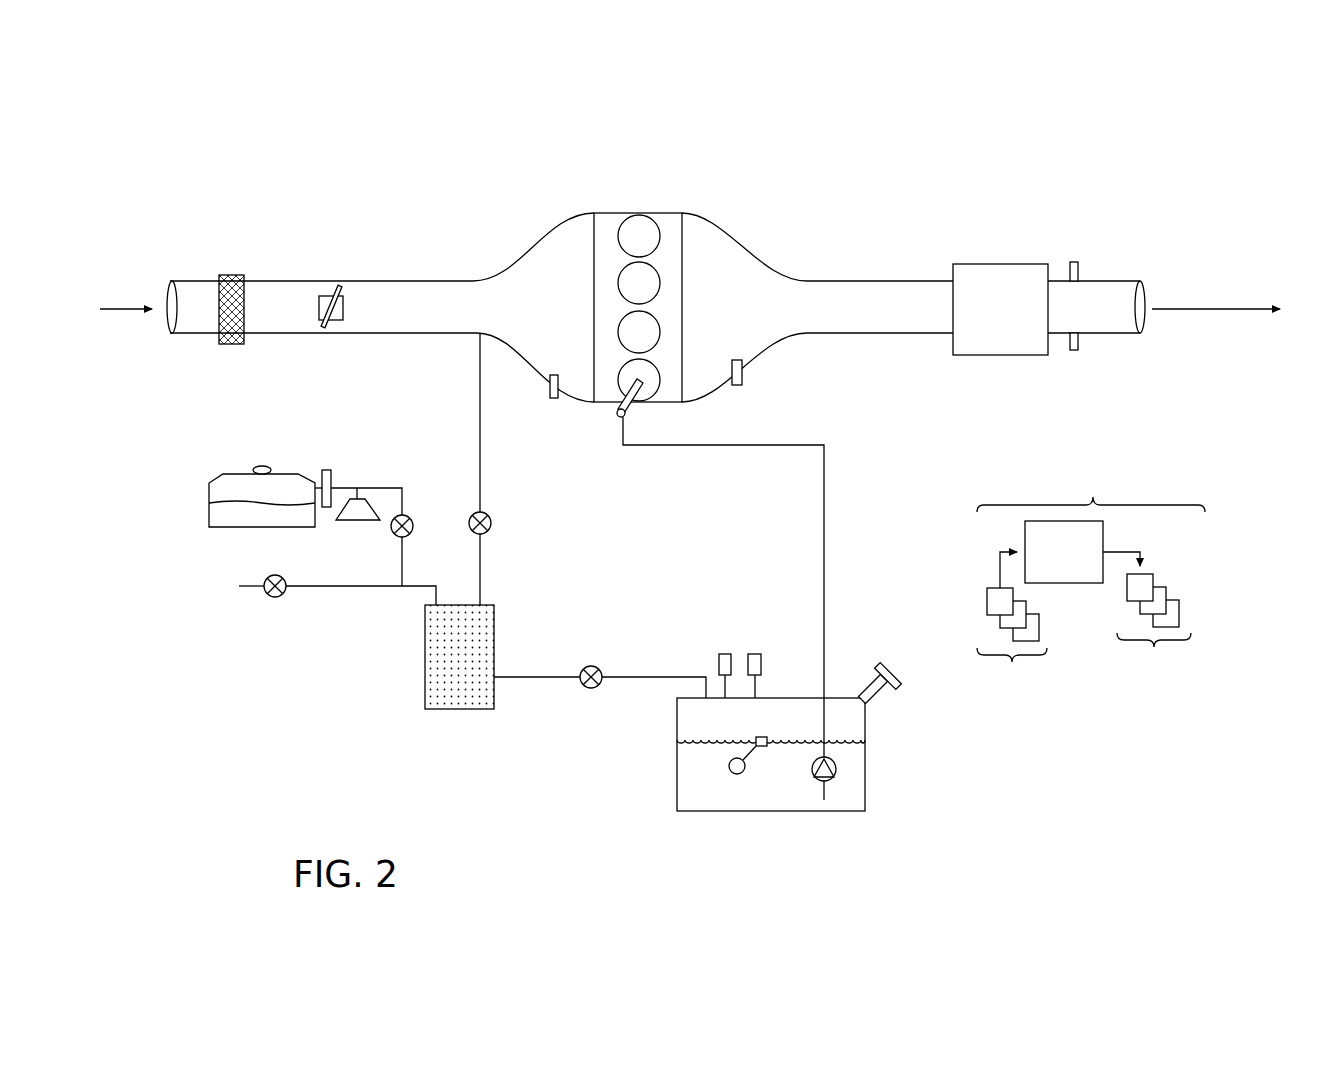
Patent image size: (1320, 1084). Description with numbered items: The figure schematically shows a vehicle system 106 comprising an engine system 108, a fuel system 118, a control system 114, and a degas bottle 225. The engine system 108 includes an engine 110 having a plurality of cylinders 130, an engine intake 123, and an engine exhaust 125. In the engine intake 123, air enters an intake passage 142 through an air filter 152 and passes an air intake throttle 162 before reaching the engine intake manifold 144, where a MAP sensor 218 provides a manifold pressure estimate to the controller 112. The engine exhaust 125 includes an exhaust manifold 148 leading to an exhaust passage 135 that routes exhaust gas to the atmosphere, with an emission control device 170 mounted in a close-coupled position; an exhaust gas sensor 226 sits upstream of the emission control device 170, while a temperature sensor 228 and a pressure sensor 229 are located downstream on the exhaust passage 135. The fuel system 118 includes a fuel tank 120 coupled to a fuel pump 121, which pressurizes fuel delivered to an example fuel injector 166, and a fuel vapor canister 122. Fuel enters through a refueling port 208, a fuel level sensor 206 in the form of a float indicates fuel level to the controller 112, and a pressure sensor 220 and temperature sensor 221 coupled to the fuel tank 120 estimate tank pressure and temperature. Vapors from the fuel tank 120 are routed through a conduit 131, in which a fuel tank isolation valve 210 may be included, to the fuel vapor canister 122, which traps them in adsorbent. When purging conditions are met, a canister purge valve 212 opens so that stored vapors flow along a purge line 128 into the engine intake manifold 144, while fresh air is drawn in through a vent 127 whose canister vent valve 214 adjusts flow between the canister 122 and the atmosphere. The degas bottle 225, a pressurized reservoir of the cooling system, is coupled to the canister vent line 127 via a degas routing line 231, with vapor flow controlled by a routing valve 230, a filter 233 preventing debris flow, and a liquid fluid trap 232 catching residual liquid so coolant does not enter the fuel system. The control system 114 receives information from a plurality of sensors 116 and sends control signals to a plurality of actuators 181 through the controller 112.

The vehicle system 106 is at (196, 203).
The engine system 108 is at (1175, 187).
The engine 110 is at (682, 290).
The controller 112 is at (1064, 552).
The control system 114 is at (1091, 484).
The sensors 116 is at (1012, 626).
The fuel system 118 is at (905, 838).
The fuel tank 120 is at (677, 811).
The fuel pump 121 is at (837, 781).
The fuel vapor canister 122 is at (440, 710).
The engine intake 123 is at (526, 236).
The engine exhaust 125 is at (792, 244).
The vent 127 is at (248, 586).
The purge line 128 is at (481, 487).
The cylinders 130 is at (635, 215).
The conduit 131 is at (640, 677).
The exhaust passage 135 is at (1121, 278).
The intake passage 142 is at (198, 334).
The engine intake manifold 144 is at (548, 307).
The exhaust manifold 148 is at (748, 307).
The air filter 152 is at (231, 275).
The air intake throttle 162 is at (343, 305).
The fuel injector 166 is at (633, 411).
The emission control device 170 is at (988, 264).
The actuators 181 is at (1147, 619).
The fuel level sensor 206 is at (764, 737).
The refueling port 208 is at (893, 670).
The fuel tank isolation valve 210 is at (589, 668).
The canister purge valve 212 is at (491, 518).
The canister vent valve 214 is at (277, 576).
The MAP sensor 218 is at (550, 382).
The pressure sensor 220 is at (761, 661).
The temperature sensor 221 is at (725, 654).
The degas bottle 225 is at (224, 474).
The exhaust gas sensor 226 is at (742, 366).
The temperature sensor 228 is at (1075, 350).
The pressure sensor 229 is at (1075, 262).
The routing valve 230 is at (411, 518).
The degas routing line 231 is at (402, 487).
The liquid fluid trap 232 is at (363, 523).
The filter 233 is at (327, 470).